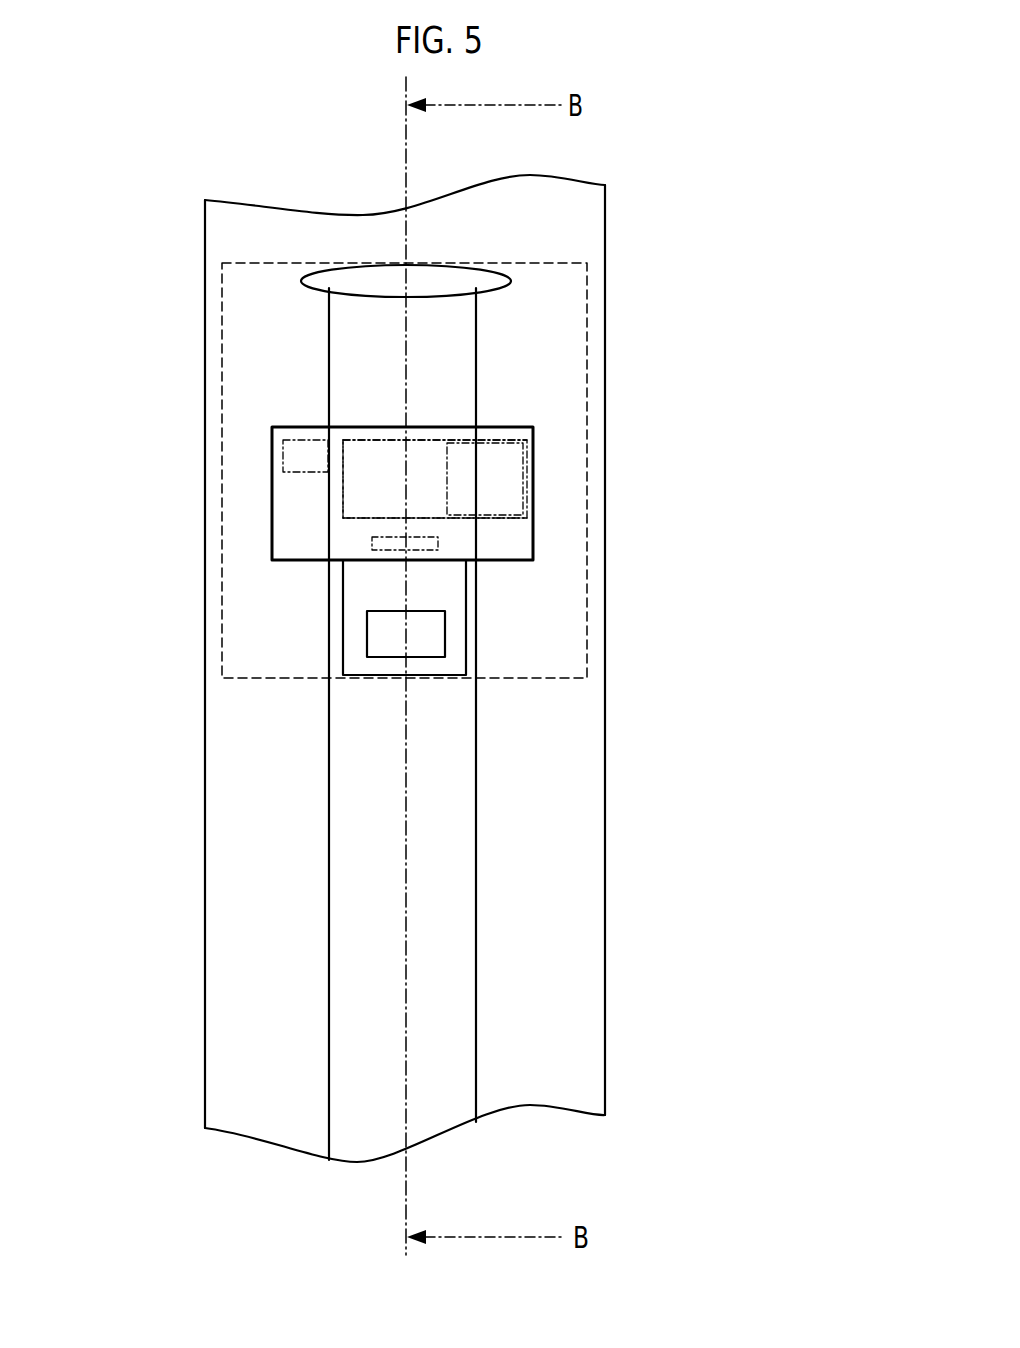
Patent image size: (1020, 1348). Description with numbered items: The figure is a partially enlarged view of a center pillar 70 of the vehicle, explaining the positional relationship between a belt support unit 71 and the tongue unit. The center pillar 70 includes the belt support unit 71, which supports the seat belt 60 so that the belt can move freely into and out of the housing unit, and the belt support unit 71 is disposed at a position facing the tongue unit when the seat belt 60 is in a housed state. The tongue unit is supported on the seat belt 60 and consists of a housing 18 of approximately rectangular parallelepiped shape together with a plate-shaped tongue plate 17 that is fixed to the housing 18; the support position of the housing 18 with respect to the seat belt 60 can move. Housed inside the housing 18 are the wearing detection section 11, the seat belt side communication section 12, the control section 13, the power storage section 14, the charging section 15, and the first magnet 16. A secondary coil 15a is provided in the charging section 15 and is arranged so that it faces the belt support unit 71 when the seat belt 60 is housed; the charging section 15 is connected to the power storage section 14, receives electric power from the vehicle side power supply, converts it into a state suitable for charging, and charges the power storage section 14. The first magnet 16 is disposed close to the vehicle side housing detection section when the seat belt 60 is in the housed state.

The center pillar 70 is at (242, 840).
The seat belt 60 is at (452, 903).
The belt support unit 71 is at (560, 319).
The housing 18 is at (533, 427).
The first magnet 16 is at (300, 445).
The seat belt side communication section 12 is at (360, 493).
The control section 13 is at (223, 486).
The power storage section 14 is at (315, 542).
The charging section 15 is at (315, 520).
The secondary coil 15a is at (523, 500).
The wearing detection section 11 is at (438, 546).
The tongue plate 17 is at (450, 597).